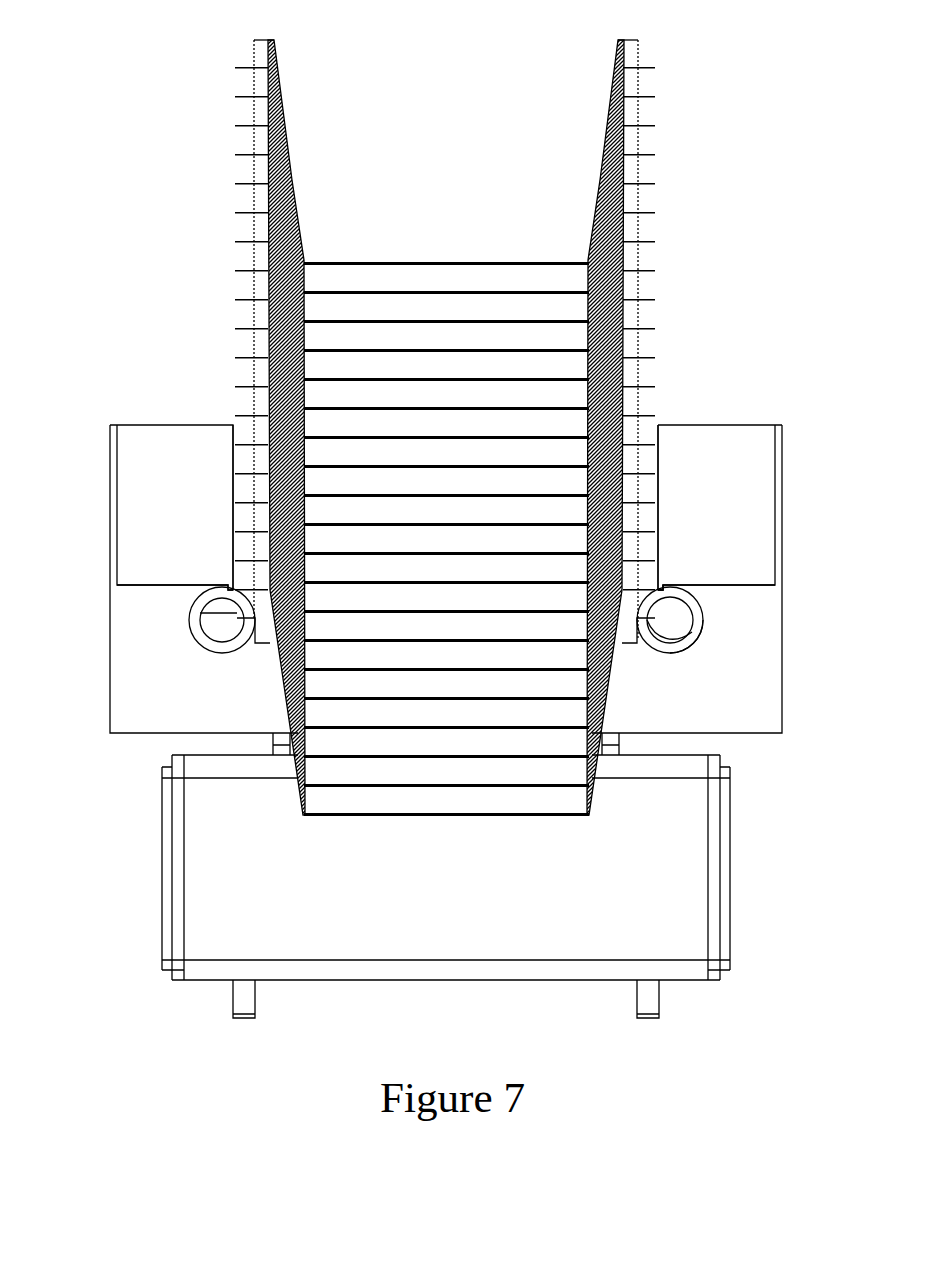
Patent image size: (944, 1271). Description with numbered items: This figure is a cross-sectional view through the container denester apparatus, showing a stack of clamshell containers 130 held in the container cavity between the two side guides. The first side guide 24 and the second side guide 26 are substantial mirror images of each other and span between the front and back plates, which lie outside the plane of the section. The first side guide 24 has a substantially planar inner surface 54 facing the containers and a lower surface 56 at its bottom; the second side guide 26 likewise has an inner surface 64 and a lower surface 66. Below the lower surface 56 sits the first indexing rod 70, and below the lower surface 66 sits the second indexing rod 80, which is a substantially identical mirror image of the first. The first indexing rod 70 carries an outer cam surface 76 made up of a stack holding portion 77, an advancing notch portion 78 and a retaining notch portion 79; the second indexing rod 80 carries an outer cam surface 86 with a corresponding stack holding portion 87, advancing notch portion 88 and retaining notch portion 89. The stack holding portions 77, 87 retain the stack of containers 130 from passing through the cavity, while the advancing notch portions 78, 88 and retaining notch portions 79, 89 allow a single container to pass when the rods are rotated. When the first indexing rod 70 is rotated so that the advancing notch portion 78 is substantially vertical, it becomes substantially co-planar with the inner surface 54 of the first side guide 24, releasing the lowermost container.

The first side guide 24 is at (104, 433).
The second side guide 26 is at (790, 433).
The inner surface 54 is at (222, 521).
The lower surface 56 is at (207, 586).
The inner surface 64 is at (667, 479).
The lower surface 66 is at (674, 572).
The first indexing rod 70 is at (207, 653).
The outer cam surface 76 is at (190, 641).
The stack holding portion 77 is at (200, 622).
The advancing notch portion 78 is at (200, 613).
The retaining notch portion 79 is at (238, 630).
The second indexing rod 80 is at (682, 657).
The outer cam surface 86 is at (704, 603).
The stack holding portion 87 is at (694, 628).
The advancing notch portion 88 is at (667, 586).
The retaining notch portion 89 is at (682, 640).
The clamshell container 130 is at (592, 802).